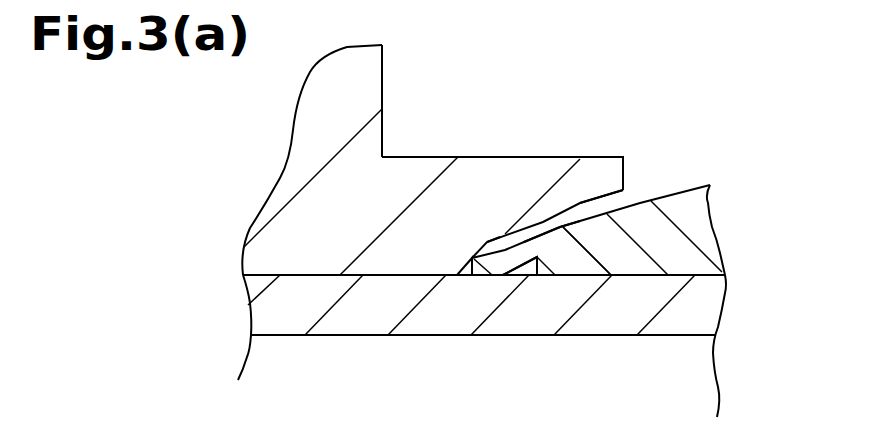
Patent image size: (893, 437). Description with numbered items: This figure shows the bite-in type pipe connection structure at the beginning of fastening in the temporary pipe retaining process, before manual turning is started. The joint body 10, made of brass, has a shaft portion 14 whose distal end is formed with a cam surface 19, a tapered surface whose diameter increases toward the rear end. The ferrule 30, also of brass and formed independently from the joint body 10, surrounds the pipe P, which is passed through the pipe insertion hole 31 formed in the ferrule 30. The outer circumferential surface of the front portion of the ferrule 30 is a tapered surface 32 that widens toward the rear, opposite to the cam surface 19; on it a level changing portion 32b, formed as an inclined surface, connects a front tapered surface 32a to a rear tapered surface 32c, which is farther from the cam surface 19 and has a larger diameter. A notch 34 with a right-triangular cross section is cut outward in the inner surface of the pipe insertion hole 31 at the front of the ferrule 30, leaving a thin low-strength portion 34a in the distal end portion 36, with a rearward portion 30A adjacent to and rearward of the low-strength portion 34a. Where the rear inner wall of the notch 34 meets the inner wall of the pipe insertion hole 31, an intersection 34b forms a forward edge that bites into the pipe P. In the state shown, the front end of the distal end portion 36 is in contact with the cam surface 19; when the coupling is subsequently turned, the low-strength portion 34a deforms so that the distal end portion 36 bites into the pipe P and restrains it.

The joint body 10 is at (415, 154).
The shaft portion 14 is at (446, 167).
The cam surface 19 is at (597, 203).
The ferrule 30 is at (701, 180).
The rearward portion 30A is at (589, 272).
The pipe insertion hole 31 is at (640, 277).
The tapered surface 32 is at (637, 112).
The front tapered surface 32a is at (505, 238).
The level changing portion 32b is at (530, 272).
The rear tapered surface 32c is at (597, 198).
The notch 34 is at (525, 265).
The low-strength portion 34a is at (519, 268).
The intersection 34b is at (533, 262).
The distal end portion 36 is at (474, 258).
The pipe P is at (713, 303).